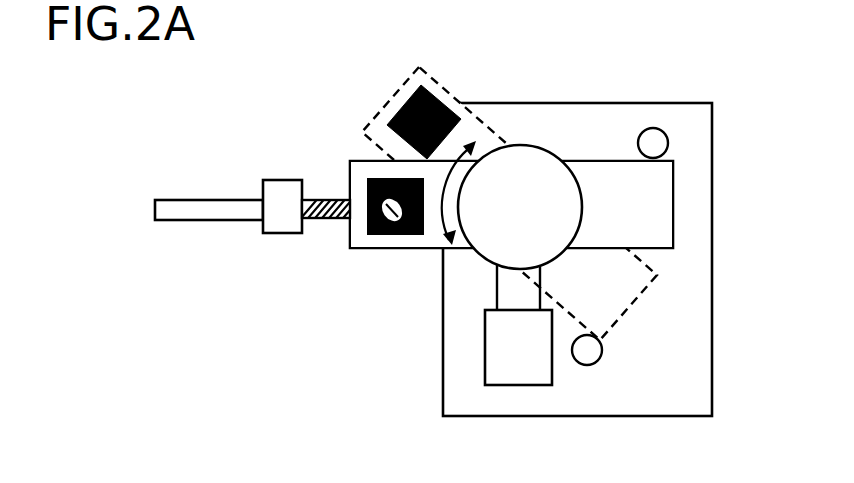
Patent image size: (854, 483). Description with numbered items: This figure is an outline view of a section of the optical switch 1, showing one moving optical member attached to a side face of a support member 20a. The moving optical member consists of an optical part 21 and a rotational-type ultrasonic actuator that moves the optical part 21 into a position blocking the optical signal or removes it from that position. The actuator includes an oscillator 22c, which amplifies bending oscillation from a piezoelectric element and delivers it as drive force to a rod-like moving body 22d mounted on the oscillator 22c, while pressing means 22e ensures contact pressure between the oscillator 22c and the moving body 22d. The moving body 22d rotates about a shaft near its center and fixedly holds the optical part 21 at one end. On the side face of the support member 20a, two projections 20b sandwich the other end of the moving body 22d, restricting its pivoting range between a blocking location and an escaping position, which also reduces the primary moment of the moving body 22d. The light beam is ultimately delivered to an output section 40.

The optical switch 1 is at (478, 28).
The support member 20a is at (703, 213).
The projections 20b is at (652, 143).
The optical part 21 is at (356, 232).
The oscillator 22c is at (528, 170).
The moving body 22d is at (604, 182).
The pressing means 22e is at (510, 294).
The output section 40 is at (279, 178).